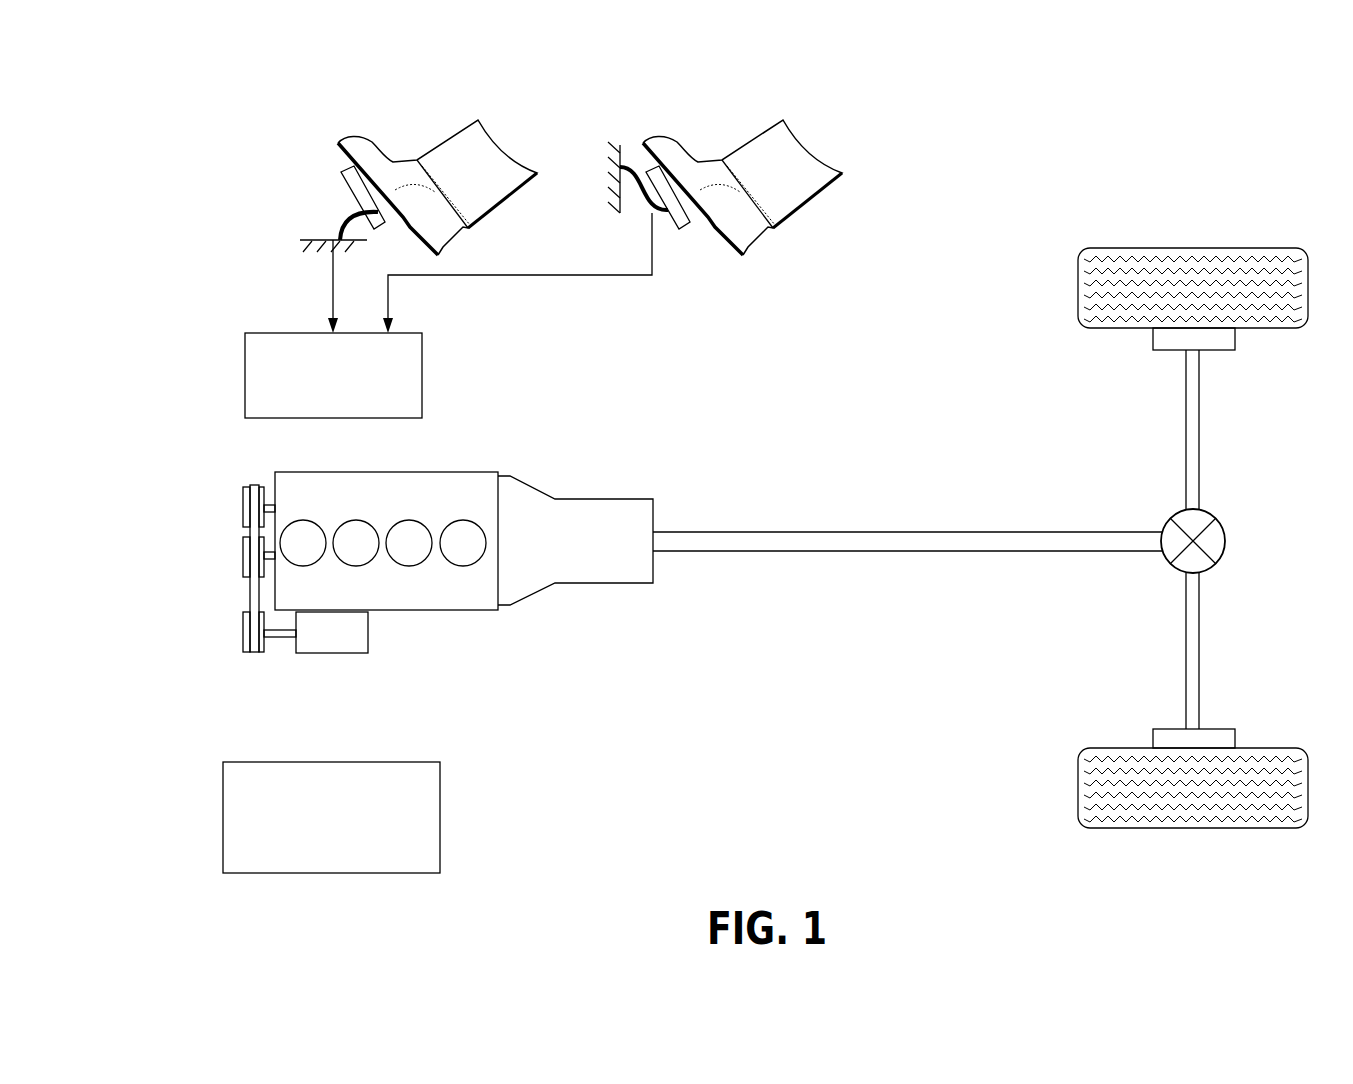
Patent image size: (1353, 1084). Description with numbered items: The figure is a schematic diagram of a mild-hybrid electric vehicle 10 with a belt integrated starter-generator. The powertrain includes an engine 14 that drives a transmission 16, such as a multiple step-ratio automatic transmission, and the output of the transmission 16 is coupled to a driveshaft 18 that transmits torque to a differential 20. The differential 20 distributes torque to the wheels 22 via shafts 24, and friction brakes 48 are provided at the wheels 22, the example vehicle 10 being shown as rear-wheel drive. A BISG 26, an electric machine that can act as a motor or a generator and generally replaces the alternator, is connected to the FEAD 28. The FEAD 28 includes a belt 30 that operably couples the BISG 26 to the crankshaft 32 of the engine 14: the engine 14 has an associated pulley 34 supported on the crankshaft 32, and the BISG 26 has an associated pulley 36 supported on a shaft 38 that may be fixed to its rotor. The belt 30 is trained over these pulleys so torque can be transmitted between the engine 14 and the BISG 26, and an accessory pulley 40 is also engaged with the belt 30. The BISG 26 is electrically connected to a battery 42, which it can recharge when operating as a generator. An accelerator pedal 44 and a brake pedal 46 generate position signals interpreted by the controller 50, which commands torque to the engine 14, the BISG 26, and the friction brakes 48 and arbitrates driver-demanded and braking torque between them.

The mild-hybrid electric vehicle 10 is at (968, 98).
The engine 14 is at (440, 472).
The transmission 16 is at (585, 499).
The driveshaft 18 is at (915, 532).
The differential 20 is at (1170, 513).
The wheels 22 is at (1192, 248).
The shafts 24 is at (1185, 655).
The BISG 26 is at (330, 654).
The FEAD 28 is at (148, 508).
The belt 30 is at (250, 595).
The crankshaft 32 is at (268, 555).
The pulley 34 is at (243, 555).
The pulley 36 is at (243, 630).
The shaft 38 is at (278, 652).
The pulley 40 is at (243, 508).
The battery 42 is at (308, 762).
The accelerator pedal 44 is at (342, 185).
The brake pedal 46 is at (672, 225).
The friction brakes 48 is at (1150, 337).
The controller 50 is at (290, 333).